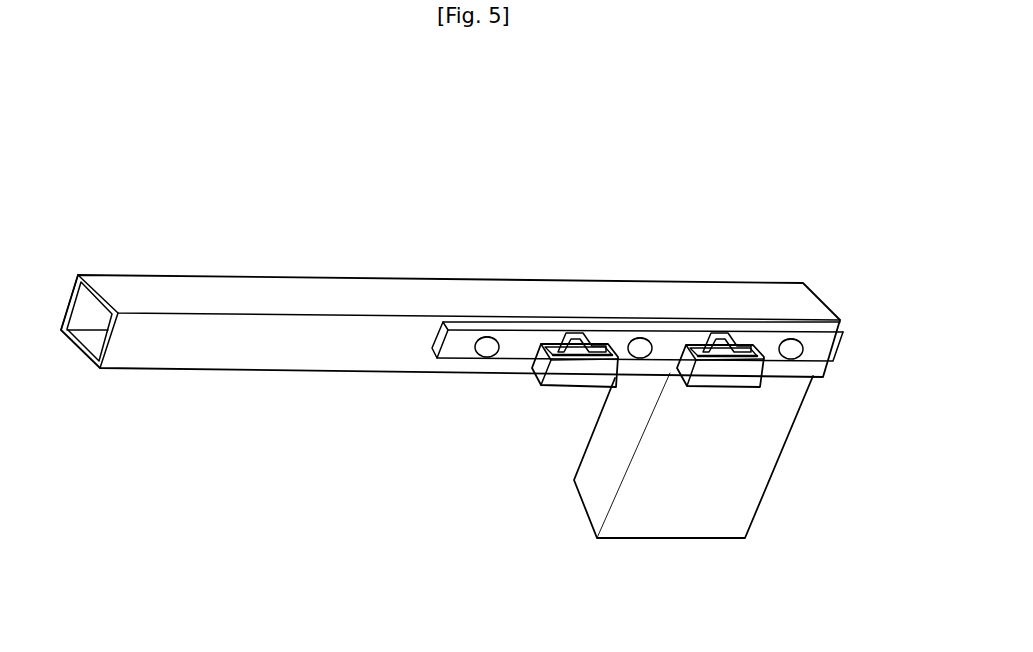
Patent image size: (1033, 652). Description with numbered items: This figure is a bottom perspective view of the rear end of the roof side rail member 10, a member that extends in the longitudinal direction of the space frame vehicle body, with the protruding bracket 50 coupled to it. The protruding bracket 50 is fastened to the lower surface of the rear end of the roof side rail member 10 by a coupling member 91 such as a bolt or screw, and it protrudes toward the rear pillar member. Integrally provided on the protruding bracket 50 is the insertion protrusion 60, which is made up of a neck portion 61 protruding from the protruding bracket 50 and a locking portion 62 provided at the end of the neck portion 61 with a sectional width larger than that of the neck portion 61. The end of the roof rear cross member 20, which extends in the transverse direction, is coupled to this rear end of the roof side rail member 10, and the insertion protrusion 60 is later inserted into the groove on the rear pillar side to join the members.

The roof side rail member 10 is at (377, 293).
The roof rear cross member 20 is at (683, 514).
The protruding bracket 50 is at (452, 347).
The insertion protrusion 60 is at (656, 279).
The neck portion 61 is at (587, 330).
The locking portion 62 is at (562, 372).
The coupling member 91 is at (802, 352).